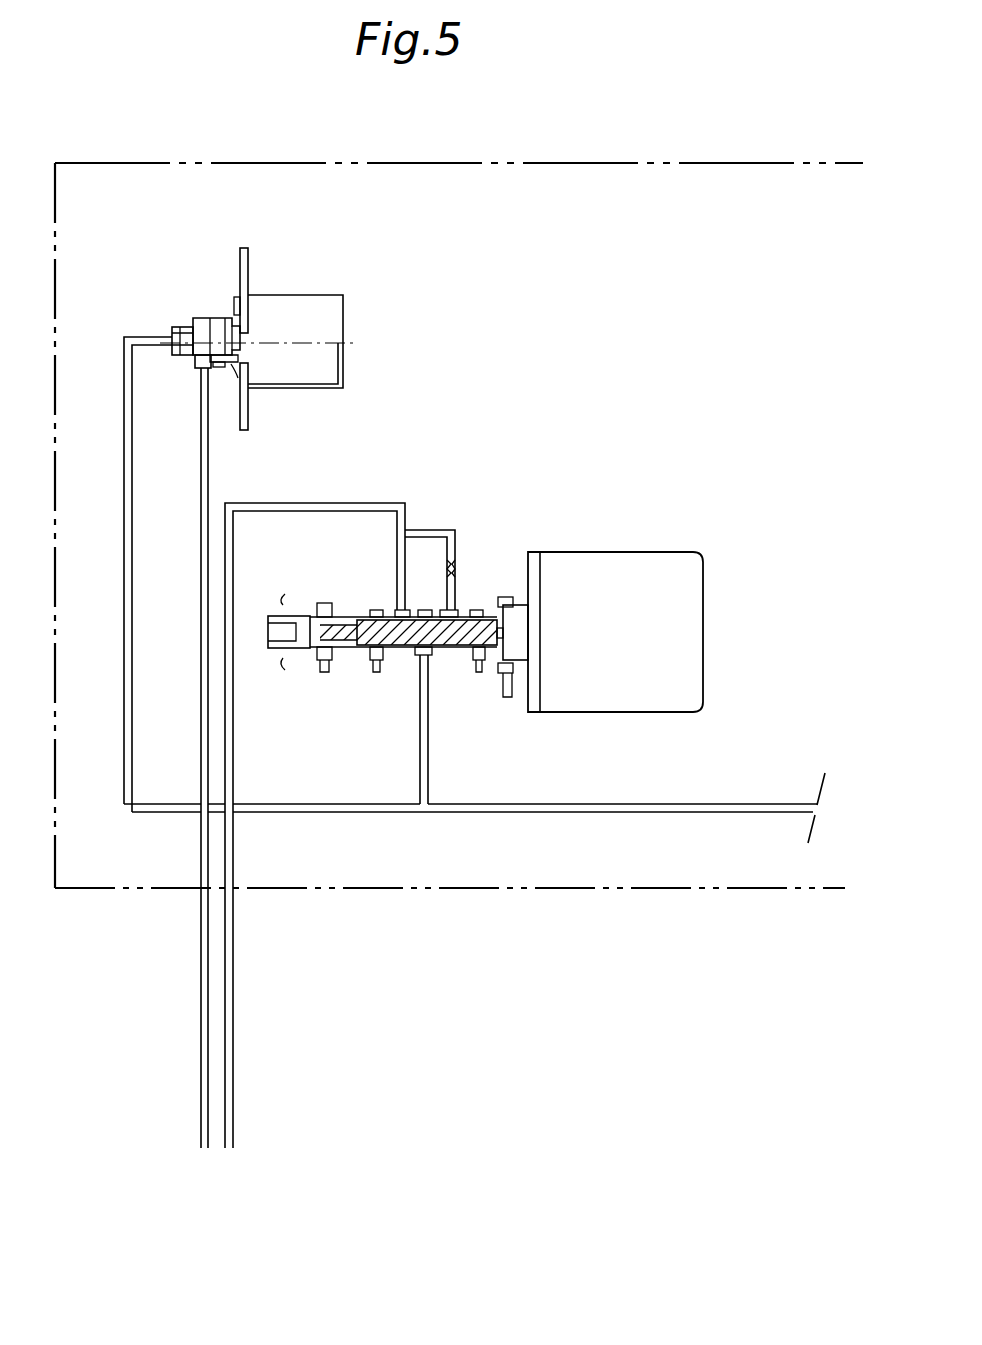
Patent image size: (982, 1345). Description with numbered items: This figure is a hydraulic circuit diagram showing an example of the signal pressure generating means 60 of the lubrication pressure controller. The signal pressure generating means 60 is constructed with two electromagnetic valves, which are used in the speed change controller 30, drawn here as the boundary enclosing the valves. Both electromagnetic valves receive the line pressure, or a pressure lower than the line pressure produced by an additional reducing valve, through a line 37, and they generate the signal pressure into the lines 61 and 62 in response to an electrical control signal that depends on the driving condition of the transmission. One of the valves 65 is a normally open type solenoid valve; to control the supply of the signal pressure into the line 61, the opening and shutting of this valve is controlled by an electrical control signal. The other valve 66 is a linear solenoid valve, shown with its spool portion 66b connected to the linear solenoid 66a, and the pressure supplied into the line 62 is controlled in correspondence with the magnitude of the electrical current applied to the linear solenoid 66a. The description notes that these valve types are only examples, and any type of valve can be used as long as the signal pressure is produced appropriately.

The speed change controller 30 is at (623, 163).
The line 37 is at (744, 804).
The signal pressure generating means 60 is at (512, 338).
The line 61 is at (201, 1037).
The line 62 is at (234, 1010).
The normally open type solenoid valve 65 is at (199, 289).
The linear solenoid valve 66 is at (499, 536).
The linear solenoid 66a is at (642, 677).
The spool valve 66b is at (360, 651).